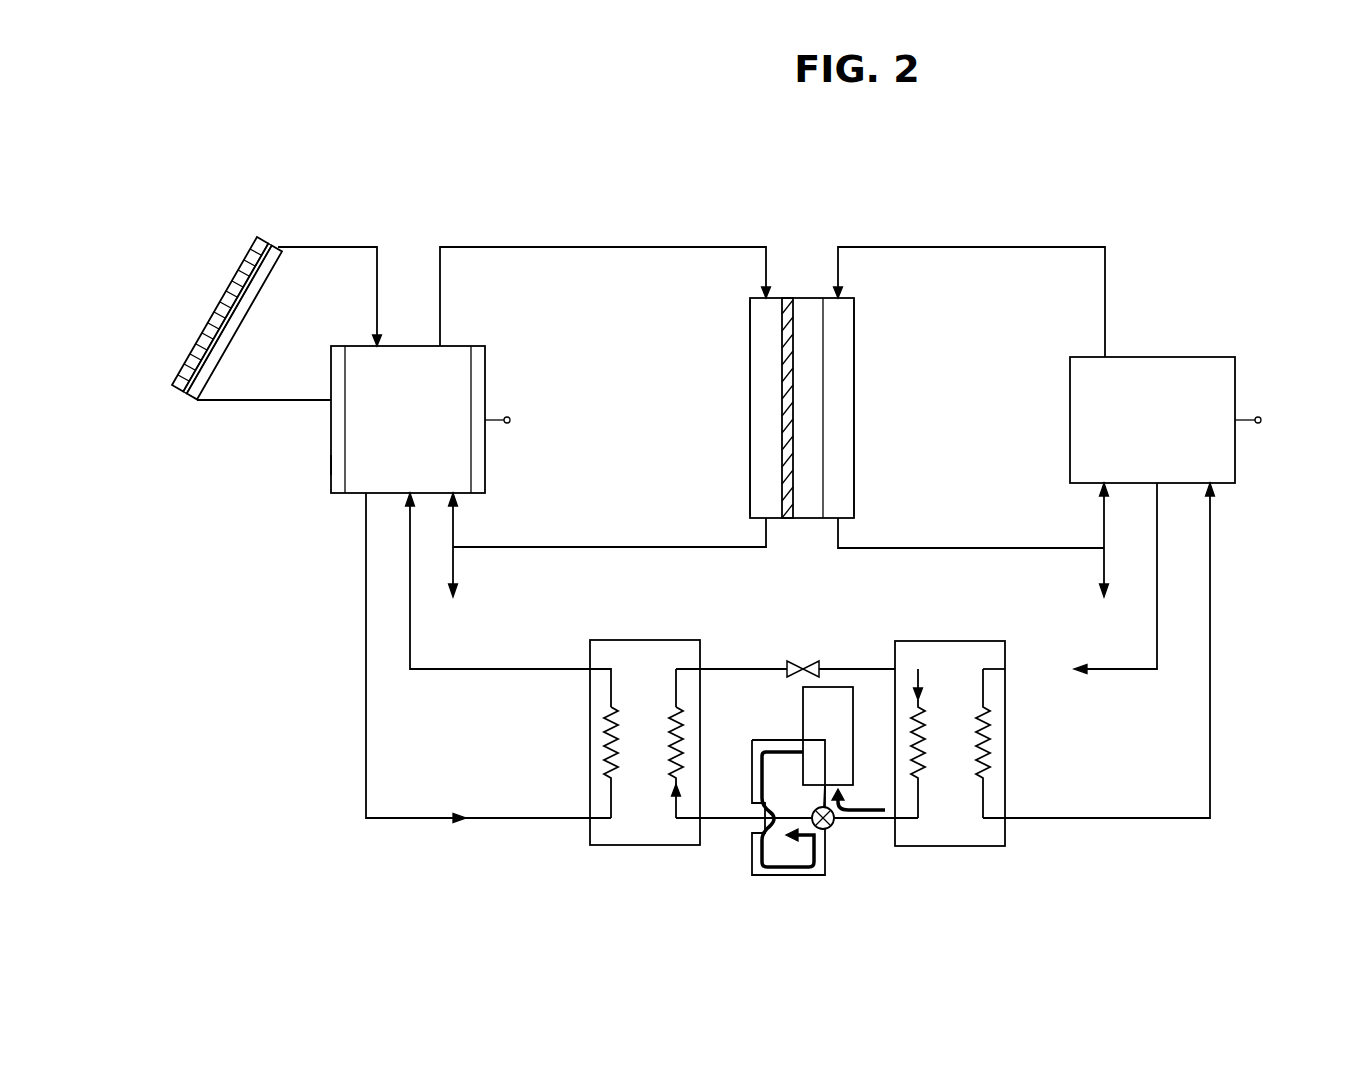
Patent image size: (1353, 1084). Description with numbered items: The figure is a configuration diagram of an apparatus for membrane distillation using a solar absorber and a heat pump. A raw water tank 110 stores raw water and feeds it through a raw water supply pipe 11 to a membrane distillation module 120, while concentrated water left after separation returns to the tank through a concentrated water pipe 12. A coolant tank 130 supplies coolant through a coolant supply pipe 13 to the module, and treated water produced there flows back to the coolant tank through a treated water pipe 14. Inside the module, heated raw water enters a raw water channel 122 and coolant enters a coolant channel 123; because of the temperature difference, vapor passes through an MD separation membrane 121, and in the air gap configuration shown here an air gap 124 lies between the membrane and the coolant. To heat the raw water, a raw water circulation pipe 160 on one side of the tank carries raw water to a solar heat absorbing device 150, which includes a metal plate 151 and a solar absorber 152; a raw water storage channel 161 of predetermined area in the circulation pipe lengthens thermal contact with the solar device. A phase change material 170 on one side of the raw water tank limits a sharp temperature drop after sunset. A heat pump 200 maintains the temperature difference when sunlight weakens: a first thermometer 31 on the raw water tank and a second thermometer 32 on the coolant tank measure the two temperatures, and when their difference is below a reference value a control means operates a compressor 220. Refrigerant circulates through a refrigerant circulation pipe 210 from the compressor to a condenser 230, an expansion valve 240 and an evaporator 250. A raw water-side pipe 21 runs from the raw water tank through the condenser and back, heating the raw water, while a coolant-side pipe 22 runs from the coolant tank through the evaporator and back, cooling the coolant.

The raw water supply pipe 11 is at (732, 246).
The concentrated water pipe 12 is at (737, 545).
The coolant supply pipe 13 is at (872, 246).
The treated water pipe 14 is at (890, 545).
The raw water-side pipe 21 is at (418, 820).
The coolant-side pipe 22 is at (1117, 820).
The first thermometer 31 is at (509, 416).
The second thermometer 32 is at (1260, 416).
The raw water tank 110 is at (457, 344).
The membrane distillation module 120 is at (812, 403).
The MD separation membrane 121 is at (786, 330).
The raw water channel 122 is at (766, 392).
The coolant channel 123 is at (838, 365).
The air gap 124 is at (810, 418).
The coolant tank 130 is at (1197, 355).
The solar heat absorbing device 150 is at (193, 312).
The metal plate 151 is at (160, 228).
The solar absorber 152 is at (245, 265).
The raw water circulation pipe 160 is at (337, 244).
The raw water storage channel 161 is at (238, 330).
The phase change material 170 is at (330, 465).
The heat pump 200 is at (790, 888).
The refrigerant circulation pipe 210 is at (727, 820).
The compressor 220 is at (803, 712).
The condenser 230 is at (624, 847).
The expansion valve 240 is at (812, 657).
The evaporator 250 is at (955, 848).